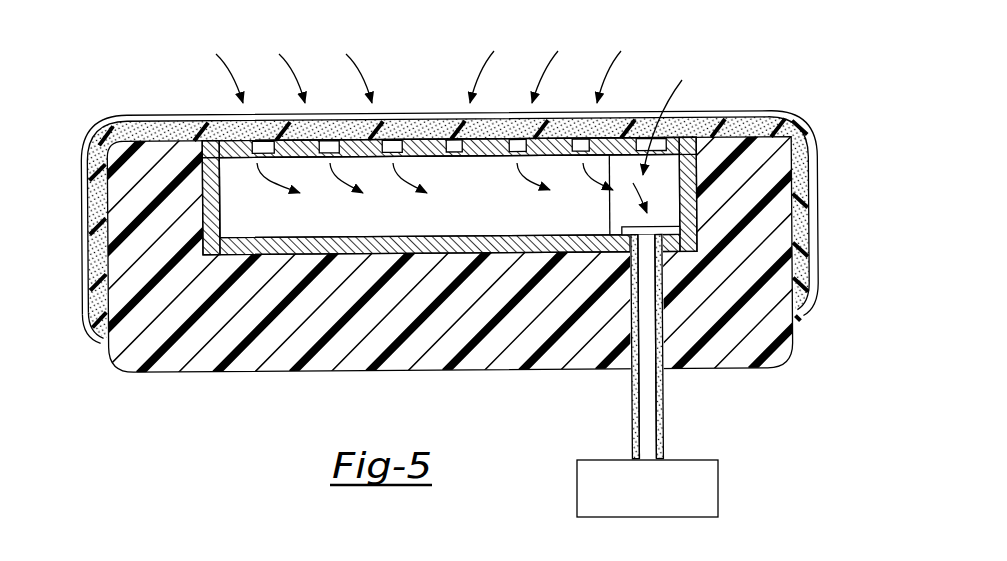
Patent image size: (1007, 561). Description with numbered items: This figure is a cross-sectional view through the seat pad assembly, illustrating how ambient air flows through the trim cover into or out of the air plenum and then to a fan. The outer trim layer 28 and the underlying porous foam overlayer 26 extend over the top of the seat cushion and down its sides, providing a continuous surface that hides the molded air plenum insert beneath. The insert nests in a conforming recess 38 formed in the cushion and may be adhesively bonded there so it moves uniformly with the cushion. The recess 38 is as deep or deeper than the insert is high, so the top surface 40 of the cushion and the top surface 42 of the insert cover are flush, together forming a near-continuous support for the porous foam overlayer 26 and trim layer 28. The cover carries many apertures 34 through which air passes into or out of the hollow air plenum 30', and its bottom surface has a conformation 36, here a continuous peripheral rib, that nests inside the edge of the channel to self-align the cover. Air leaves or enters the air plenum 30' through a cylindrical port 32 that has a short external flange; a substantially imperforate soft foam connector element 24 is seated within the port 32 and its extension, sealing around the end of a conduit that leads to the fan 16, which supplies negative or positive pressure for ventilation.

The fan 16 is at (720, 483).
The foam connector element 24 is at (632, 272).
The porous foam overlayer 26 is at (97, 268).
The trim layer 28 is at (82, 210).
The air plenum 30' is at (260, 198).
The port 32 is at (650, 252).
The apertures 34 is at (457, 147).
The conformation 36 is at (480, 158).
The recess 38 is at (425, 236).
The top surface of cushion 40 is at (147, 155).
The top surface of cover 42 is at (207, 140).